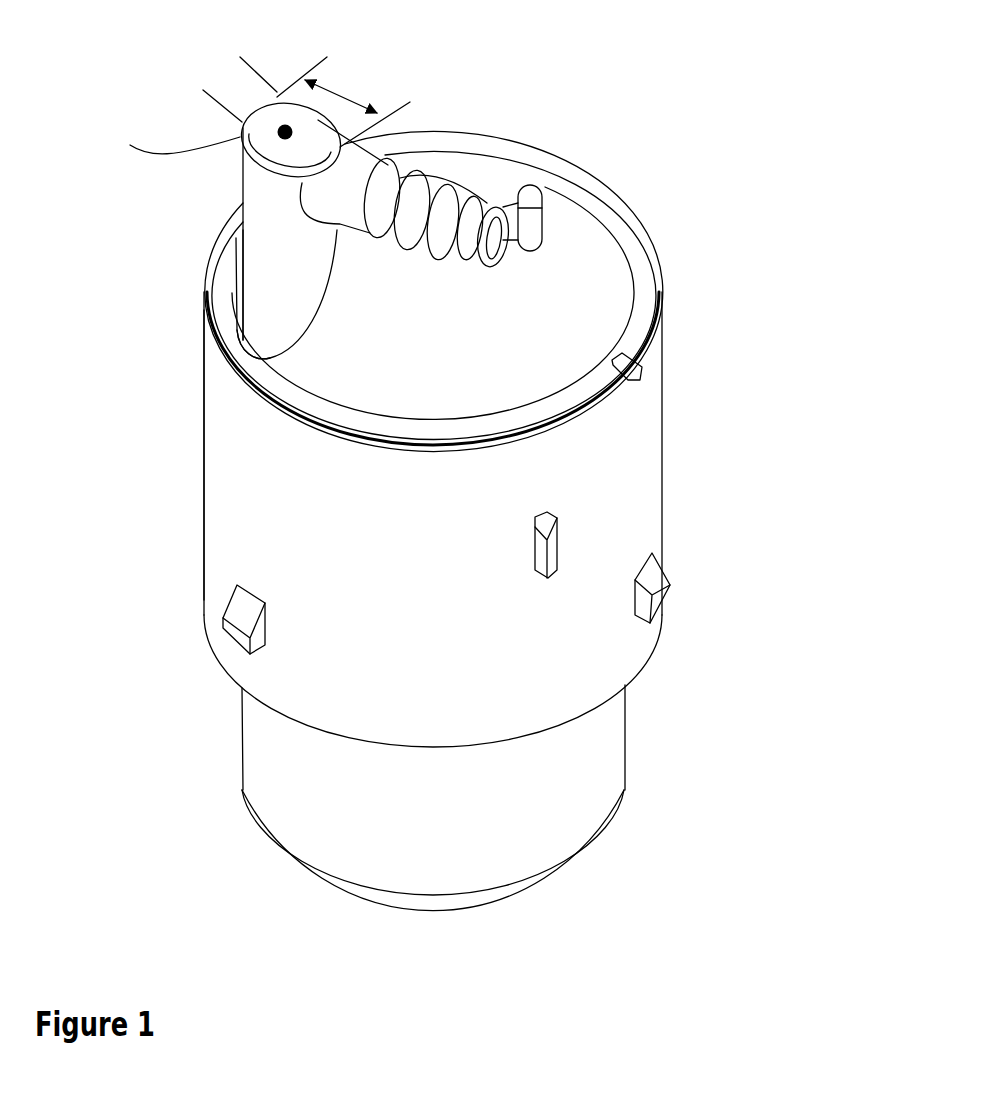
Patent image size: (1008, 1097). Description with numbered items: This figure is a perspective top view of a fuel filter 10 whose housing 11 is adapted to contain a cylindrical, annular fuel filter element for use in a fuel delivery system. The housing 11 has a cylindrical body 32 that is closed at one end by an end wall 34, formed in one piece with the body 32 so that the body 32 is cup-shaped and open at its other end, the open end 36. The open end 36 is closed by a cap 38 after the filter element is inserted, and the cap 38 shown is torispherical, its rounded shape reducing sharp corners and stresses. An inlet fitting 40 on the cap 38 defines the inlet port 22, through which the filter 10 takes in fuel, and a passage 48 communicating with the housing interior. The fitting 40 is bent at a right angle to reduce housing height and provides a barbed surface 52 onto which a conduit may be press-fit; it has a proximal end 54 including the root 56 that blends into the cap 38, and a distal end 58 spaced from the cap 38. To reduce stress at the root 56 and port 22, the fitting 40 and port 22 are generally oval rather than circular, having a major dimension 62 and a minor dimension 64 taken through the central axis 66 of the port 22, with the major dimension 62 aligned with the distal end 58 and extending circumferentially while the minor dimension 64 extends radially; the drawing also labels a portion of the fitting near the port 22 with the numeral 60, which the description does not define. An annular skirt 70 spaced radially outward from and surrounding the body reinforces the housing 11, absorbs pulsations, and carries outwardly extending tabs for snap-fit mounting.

The fuel filter 10 is at (603, 82).
The housing 11 is at (672, 375).
The inlet port 22 is at (241, 185).
The cylindrical body 32 is at (608, 733).
The end wall 34 is at (515, 897).
The open end 36 is at (665, 278).
The cap 38 is at (638, 257).
The inlet fitting 40 is at (268, 231).
The passage 48 is at (489, 250).
The barbed surface 52 is at (433, 215).
The proximal end 54 is at (293, 352).
The root 56 is at (315, 320).
The distal end 58 is at (525, 230).
The post 60 is at (242, 181).
The major dimension 62 is at (340, 92).
The minor dimension 64 is at (300, 40).
The central axis 66 is at (216, 116).
The annular skirt 70 is at (200, 468).